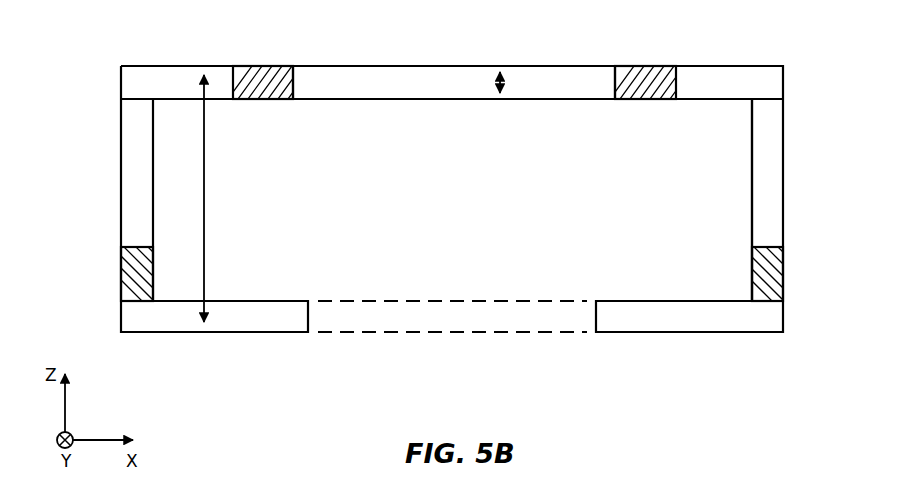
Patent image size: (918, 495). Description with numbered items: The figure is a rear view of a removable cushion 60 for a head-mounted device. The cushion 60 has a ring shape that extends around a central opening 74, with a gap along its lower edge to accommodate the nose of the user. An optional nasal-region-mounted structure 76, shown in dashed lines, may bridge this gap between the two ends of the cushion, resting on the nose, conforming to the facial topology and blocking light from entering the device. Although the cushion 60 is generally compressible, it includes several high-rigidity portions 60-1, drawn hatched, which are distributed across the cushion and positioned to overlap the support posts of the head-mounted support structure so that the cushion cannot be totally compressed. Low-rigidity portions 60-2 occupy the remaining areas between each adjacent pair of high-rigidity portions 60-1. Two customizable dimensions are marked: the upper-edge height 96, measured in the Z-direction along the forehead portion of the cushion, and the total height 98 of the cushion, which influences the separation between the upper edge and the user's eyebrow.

The removable cushion 60 is at (731, 70).
The high-rigidity portions 60-1 is at (270, 70).
The low-rigidity portions 60-2 is at (402, 70).
The central opening 74 is at (730, 126).
The nasal-region-mounted structure 76 is at (463, 316).
The upper-edge height 96 is at (504, 82).
The total height 98 is at (205, 194).